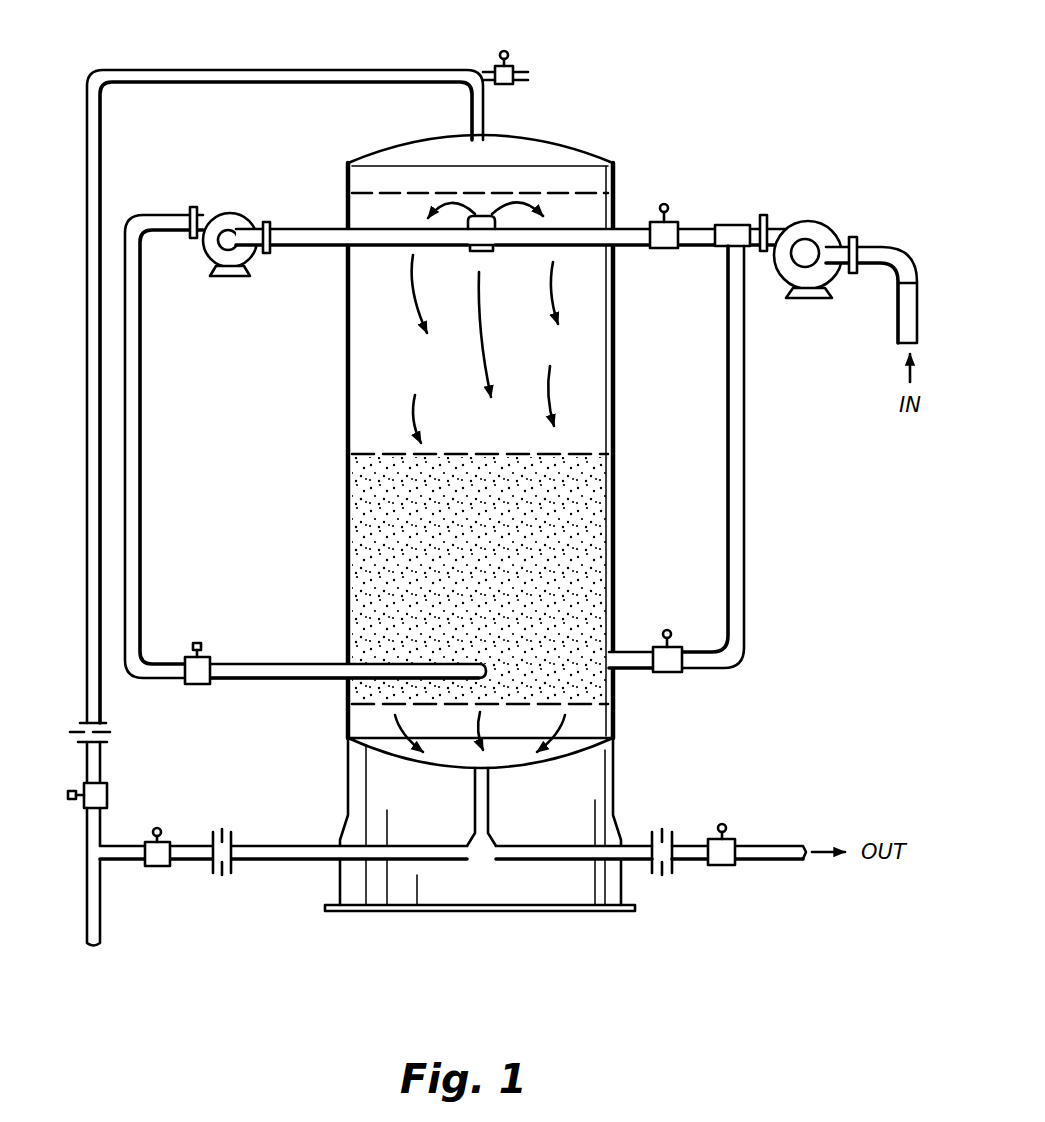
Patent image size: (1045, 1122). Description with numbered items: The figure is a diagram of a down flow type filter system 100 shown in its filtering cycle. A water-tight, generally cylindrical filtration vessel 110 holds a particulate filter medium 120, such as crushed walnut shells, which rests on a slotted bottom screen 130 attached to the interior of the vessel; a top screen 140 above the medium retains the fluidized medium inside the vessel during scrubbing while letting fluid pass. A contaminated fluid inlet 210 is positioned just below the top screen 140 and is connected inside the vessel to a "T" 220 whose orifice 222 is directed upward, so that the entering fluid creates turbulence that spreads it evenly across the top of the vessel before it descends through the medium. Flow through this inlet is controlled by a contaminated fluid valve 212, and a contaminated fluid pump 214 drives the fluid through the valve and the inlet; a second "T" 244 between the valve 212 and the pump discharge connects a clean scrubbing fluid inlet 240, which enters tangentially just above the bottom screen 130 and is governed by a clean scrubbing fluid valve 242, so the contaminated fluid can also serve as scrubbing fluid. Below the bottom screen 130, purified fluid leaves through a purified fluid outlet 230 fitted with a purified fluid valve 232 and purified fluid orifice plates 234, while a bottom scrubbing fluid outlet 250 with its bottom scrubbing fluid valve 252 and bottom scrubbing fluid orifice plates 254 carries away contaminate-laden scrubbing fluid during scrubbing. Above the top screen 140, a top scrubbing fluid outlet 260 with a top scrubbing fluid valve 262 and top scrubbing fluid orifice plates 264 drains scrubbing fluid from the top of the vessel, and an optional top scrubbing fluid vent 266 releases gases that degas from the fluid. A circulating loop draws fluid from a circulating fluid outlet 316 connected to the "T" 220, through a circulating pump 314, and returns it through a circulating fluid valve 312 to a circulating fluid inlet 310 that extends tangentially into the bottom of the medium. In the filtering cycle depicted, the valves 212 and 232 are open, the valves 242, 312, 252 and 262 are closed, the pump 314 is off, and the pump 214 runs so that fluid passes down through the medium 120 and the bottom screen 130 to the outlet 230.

The down flow type filter system 100 is at (575, 82).
The filtration vessel 110 is at (348, 393).
The filter medium 120 is at (470, 580).
The bottom screen 130 is at (580, 702).
The top screen 140 is at (481, 215).
The contaminated fluid inlet 210 is at (573, 240).
The contaminated fluid valve 212 is at (678, 222).
The contaminated fluid pump 214 is at (817, 247).
The "T" 220 is at (483, 251).
The orifice 222 is at (490, 198).
The purified fluid outlet 230 is at (563, 861).
The purified fluid valve 232 is at (733, 838).
The purified fluid orifice plates 234 is at (663, 827).
The clean scrubbing fluid inlet 240 is at (637, 672).
The clean scrubbing fluid valve 242 is at (672, 672).
The "T" 244 is at (740, 222).
The bottom scrubbing fluid outlet 250 is at (378, 861).
The bottom scrubbing fluid valve 252 is at (170, 843).
The bottom scrubbing fluid orifice plates 254 is at (226, 870).
The top scrubbing fluid outlet 260 is at (472, 110).
The top scrubbing fluid valve 262 is at (107, 787).
The top scrubbing fluid orifice plates 264 is at (110, 728).
The top scrubbing fluid vent 266 is at (500, 66).
The circulating fluid inlet 310 is at (280, 664).
The circulating fluid valve 312 is at (190, 657).
The circulating pump 314 is at (232, 232).
The circulating fluid outlet 316 is at (312, 233).